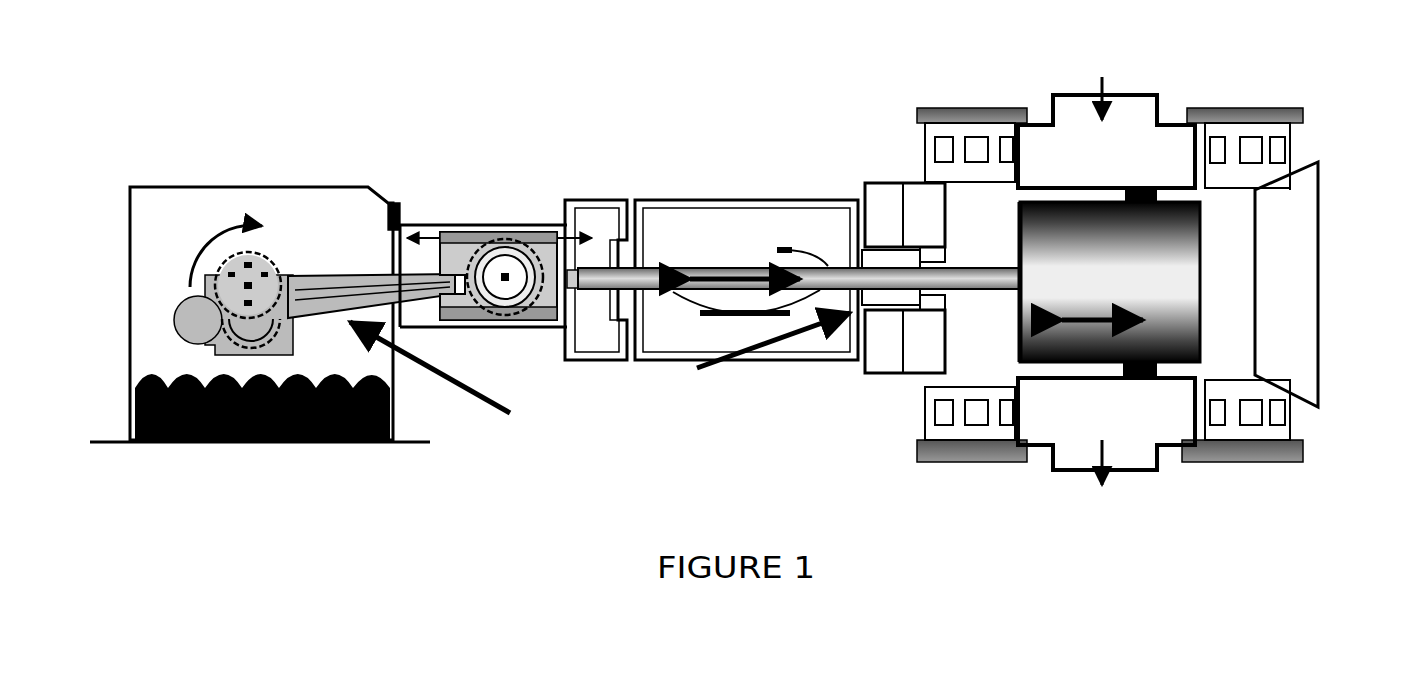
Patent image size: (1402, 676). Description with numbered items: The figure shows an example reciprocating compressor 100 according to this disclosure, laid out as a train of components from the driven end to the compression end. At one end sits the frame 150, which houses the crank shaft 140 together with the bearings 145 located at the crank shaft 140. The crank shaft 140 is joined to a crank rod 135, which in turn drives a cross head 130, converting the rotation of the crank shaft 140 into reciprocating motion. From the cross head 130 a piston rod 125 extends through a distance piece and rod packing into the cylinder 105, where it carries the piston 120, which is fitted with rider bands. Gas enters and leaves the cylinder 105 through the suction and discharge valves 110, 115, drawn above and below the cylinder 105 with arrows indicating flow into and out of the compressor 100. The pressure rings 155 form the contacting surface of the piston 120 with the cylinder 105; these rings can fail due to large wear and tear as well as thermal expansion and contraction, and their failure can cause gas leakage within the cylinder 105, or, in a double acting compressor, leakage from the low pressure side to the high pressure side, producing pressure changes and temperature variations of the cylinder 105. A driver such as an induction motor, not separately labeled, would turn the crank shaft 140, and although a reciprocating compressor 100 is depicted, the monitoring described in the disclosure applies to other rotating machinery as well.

The reciprocating compressor 100 is at (1333, 98).
The cylinder 105 is at (1322, 280).
The suction valve 110 is at (1138, 82).
The discharge valve 115 is at (1127, 492).
The piston 120 is at (1018, 245).
The piston rod 125 is at (963, 288).
The cross head 130 is at (500, 228).
The crank rod 135 is at (405, 310).
The crank shaft 140 is at (272, 252).
The bearings 145 is at (212, 300).
The frame 150 is at (128, 212).
The pressure rings 155 is at (1120, 192).